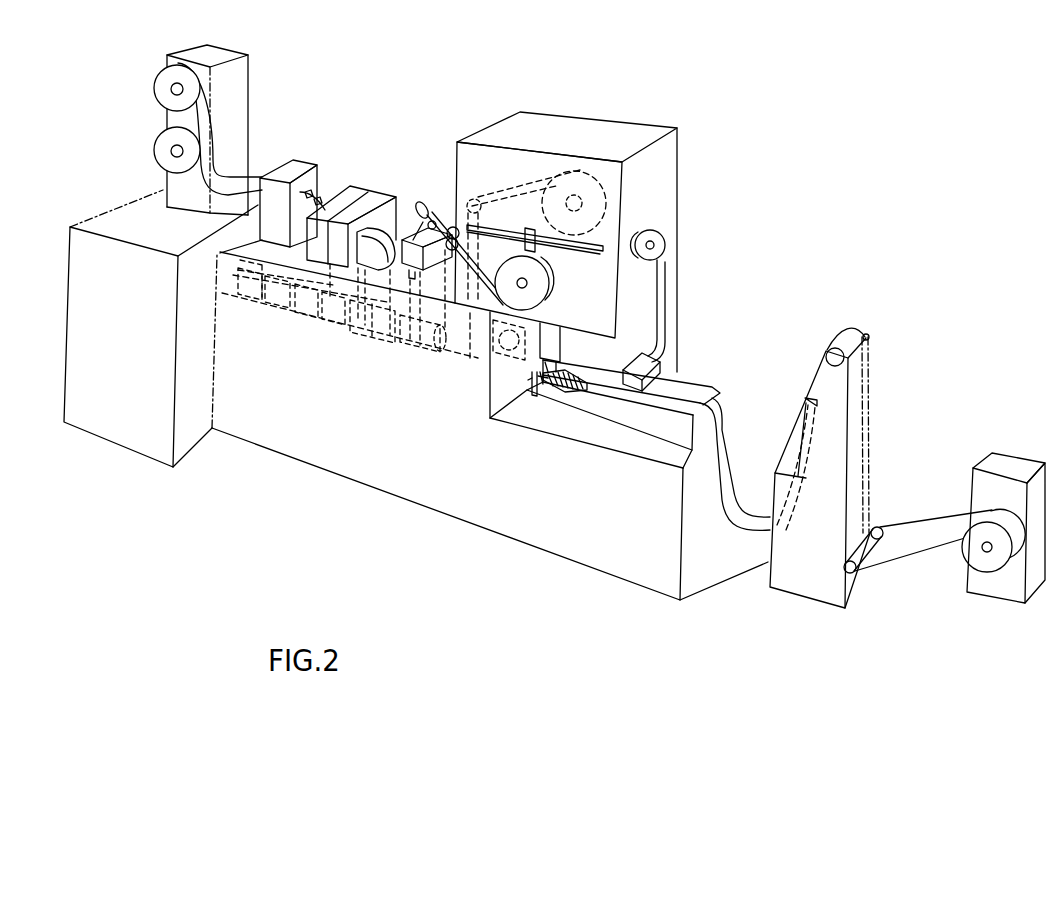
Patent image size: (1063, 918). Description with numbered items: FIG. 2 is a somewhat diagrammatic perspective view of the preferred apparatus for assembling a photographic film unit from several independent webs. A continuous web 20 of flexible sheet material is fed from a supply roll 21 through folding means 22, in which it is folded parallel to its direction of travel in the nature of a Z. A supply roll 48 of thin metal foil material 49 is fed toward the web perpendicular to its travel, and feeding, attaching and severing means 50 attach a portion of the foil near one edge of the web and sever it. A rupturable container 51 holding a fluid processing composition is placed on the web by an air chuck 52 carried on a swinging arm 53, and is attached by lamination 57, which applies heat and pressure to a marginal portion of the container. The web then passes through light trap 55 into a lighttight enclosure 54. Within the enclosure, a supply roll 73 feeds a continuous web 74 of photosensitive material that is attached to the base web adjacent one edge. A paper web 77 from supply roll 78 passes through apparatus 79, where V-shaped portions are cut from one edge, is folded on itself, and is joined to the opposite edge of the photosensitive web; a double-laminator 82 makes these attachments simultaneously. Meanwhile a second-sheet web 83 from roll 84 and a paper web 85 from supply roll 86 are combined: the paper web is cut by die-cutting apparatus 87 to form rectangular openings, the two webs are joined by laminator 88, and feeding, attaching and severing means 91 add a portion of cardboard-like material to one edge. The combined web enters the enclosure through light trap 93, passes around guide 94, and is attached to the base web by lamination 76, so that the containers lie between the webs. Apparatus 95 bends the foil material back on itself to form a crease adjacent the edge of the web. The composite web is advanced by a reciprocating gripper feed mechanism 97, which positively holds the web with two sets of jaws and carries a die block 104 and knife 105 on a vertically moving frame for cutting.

The continuous web 20 is at (690, 384).
The supply roll 21 is at (973, 555).
The folding means 22 is at (792, 403).
The supply roll 48 is at (667, 243).
The flexible material 49 is at (668, 316).
The feeding, attaching and severing means 50 is at (662, 366).
The rupturable container 51 is at (597, 388).
The air chuck 52 is at (541, 398).
The swinging arm 53 is at (531, 397).
The lighttight enclosure 54 is at (403, 396).
The light trap 55 is at (485, 356).
The lamination 57 is at (562, 354).
The supply roll 73 is at (580, 167).
The continuous web 74 is at (474, 267).
The lamination 76 is at (369, 320).
The continuous web 77 is at (487, 265).
The supply roll 78 is at (552, 290).
The apparatus 79 is at (415, 268).
The double-laminator 82 is at (422, 313).
The web 83 is at (218, 213).
The roll 84 is at (156, 152).
The web 85 is at (222, 147).
The supply roll 86 is at (158, 77).
The die-cutting apparatus 87 is at (272, 195).
The laminator 88 is at (351, 212).
The feeding, attaching and severing means 91 is at (373, 218).
The light trap 93 is at (400, 222).
The guide 94 is at (393, 326).
The apparatus 95 is at (334, 319).
The reciprocating gripper feed mechanism 97 is at (309, 311).
The die block 104 is at (269, 322).
The knife 105 is at (242, 309).